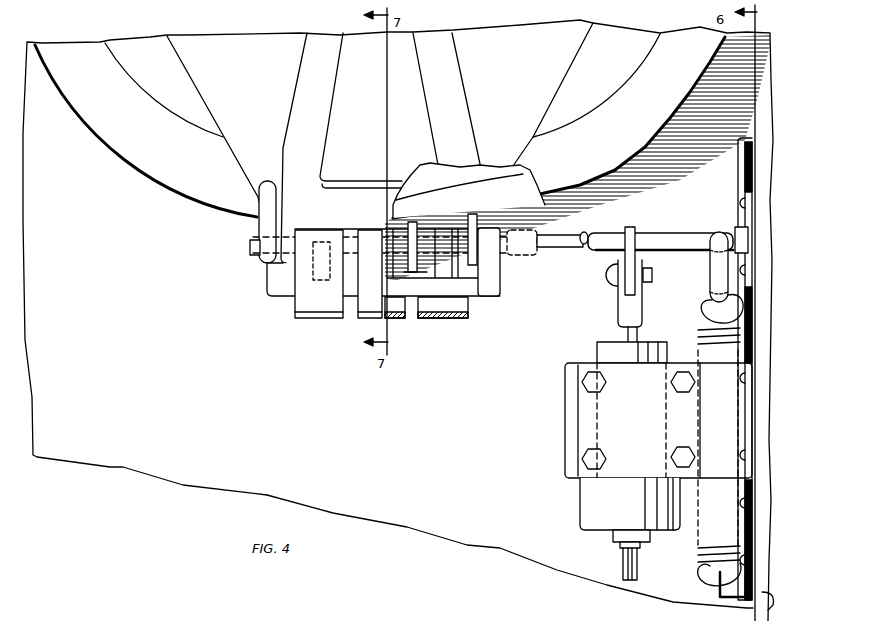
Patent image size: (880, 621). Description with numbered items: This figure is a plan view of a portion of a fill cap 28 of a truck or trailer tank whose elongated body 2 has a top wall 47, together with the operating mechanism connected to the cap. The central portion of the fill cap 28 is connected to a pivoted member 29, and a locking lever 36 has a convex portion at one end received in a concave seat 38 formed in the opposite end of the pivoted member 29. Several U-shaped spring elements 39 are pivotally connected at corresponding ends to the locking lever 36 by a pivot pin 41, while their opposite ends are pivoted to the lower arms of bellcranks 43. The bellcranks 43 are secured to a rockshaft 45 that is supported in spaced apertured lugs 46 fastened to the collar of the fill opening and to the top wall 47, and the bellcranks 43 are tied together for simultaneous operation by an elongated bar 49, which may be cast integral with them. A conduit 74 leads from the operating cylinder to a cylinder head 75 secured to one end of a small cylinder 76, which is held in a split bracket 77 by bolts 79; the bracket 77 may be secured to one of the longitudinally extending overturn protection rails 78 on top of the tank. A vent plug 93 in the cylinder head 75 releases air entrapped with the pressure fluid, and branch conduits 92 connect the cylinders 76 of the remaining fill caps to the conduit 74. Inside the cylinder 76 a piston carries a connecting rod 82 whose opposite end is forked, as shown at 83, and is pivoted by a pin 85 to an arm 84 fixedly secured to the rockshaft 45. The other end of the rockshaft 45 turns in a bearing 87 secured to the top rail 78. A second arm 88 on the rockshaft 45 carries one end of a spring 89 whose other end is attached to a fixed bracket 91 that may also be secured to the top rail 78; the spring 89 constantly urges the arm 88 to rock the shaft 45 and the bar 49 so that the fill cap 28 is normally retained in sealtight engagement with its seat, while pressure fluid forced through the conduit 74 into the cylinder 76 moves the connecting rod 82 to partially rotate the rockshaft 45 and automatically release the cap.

The elongated body 2 is at (115, 472).
The fill cap 28 is at (146, 184).
The pivoted member 29 is at (197, 67).
The locking lever 36 is at (300, 78).
The concave seat 38 is at (278, 223).
The U-shaped spring elements 39 is at (365, 243).
The pivot pin 41 is at (250, 247).
The bellcranks 43 is at (260, 289).
The rockshaft 45 is at (674, 236).
The apertured lugs 46 is at (413, 222).
The top wall 47 is at (175, 427).
The elongated bar 49 is at (488, 295).
The conduit 74 is at (742, 179).
The cylinder head 75 is at (590, 512).
The small cylinder 76 is at (593, 348).
The split bracket 77 is at (578, 432).
The overturn protection rail 78 is at (773, 606).
The bolts 79 is at (583, 386).
The connecting rod 82 is at (628, 338).
The forked end 83 is at (618, 306).
The arm 84 is at (628, 288).
The pin 85 is at (646, 281).
The bearing 87 is at (742, 233).
The second arm 88 is at (712, 262).
The spring 89 is at (703, 320).
The fixed bracket 91 is at (712, 592).
The branch conduits 92 is at (623, 567).
The vent plug 93 is at (620, 545).